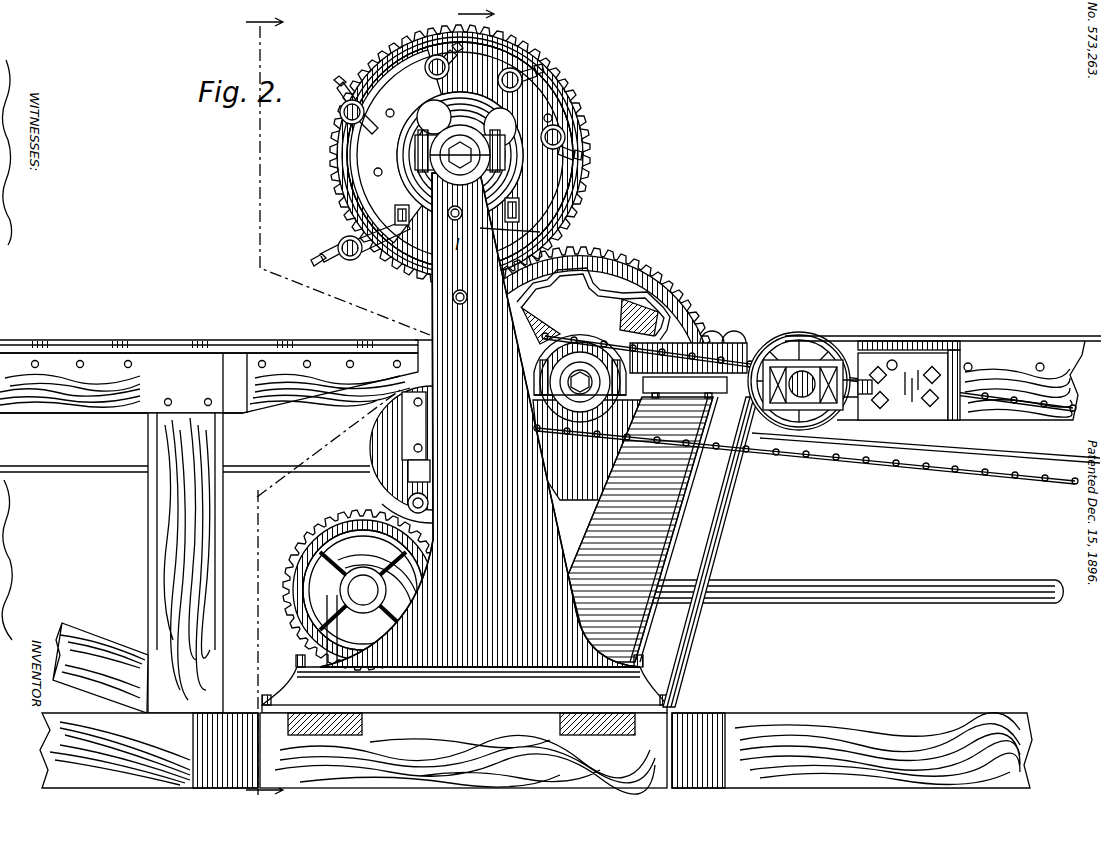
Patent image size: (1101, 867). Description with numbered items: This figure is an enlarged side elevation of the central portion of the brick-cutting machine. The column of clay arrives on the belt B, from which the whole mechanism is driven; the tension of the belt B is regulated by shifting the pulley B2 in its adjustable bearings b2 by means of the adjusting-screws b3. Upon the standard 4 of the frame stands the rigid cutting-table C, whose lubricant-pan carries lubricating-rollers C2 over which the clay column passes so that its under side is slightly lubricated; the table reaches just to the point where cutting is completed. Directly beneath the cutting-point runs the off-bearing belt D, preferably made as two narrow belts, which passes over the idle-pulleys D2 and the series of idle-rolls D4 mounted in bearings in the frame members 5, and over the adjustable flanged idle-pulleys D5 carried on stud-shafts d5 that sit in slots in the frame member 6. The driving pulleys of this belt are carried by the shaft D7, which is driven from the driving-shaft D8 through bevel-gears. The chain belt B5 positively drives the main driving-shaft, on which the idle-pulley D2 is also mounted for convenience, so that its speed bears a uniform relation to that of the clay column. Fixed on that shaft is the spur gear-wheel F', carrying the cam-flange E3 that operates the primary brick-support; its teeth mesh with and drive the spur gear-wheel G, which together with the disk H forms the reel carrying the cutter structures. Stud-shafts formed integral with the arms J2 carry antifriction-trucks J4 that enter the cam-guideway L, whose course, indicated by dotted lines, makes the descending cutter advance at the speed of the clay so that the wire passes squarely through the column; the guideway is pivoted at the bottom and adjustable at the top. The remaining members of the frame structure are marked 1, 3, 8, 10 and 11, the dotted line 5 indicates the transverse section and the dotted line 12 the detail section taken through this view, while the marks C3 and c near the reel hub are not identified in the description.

The frame member 1 is at (257, 712).
The frame member 3 is at (1022, 411).
The standard 4 is at (678, 508).
The frame member 5 is at (239, 408).
The frame member 6 is at (372, 440).
The frame member 8 is at (402, 413).
The frame member 10 is at (728, 516).
The frame member 11 is at (148, 582).
The section line 12 is at (473, 179).
The belt B is at (968, 336).
The pulley B2 is at (816, 342).
The chain belt B5 is at (862, 463).
The adjustable bearings b2 is at (830, 408).
The adjusting-screws b3 is at (872, 394).
The cutting-table C is at (561, 332).
The lubricating-rollers C2 is at (394, 214).
The hub bearing C3 is at (440, 200).
The lever c is at (646, 356).
The off-bearing belt D is at (108, 338).
The idle-pulleys D2 is at (306, 547).
The idle-rolls D4 is at (262, 340).
The adjustable idle-pulleys D5 is at (378, 502).
The shaft D7 is at (388, 603).
The driving-shaft D8 is at (776, 601).
The stud-shafts d5 is at (428, 501).
The cam-flange E3 is at (665, 311).
The spur gear-wheel F' is at (603, 308).
The combined spur-gear and disk G is at (371, 52).
The reel disk H is at (533, 84).
The arms J2 is at (431, 56).
The antifriction-trucks J4 is at (341, 103).
The cam-guideway L is at (510, 197).